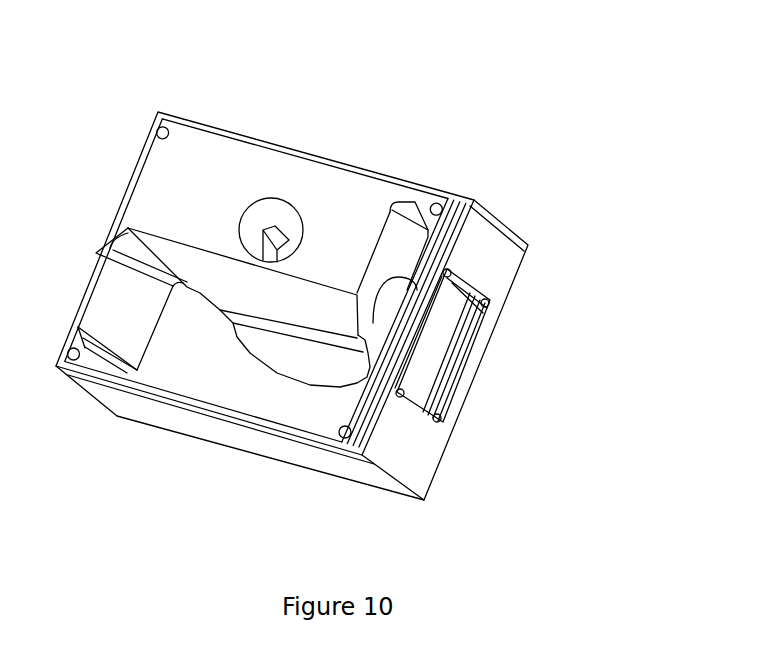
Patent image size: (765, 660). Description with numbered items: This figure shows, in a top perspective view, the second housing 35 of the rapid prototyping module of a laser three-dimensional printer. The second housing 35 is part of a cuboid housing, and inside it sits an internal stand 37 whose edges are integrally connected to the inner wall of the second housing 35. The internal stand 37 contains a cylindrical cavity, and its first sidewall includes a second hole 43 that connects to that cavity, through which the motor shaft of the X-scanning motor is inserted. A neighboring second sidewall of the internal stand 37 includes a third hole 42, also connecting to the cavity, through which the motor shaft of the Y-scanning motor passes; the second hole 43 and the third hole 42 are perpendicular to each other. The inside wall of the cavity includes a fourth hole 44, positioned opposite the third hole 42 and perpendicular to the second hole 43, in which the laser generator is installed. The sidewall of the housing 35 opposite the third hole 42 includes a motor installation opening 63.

The second housing 35 is at (485, 260).
The internal stand 37 is at (345, 202).
The third hole 42 is at (390, 305).
The second hole 43 is at (262, 215).
The fourth hole 44 is at (268, 242).
The motor installation opening 63 is at (437, 367).